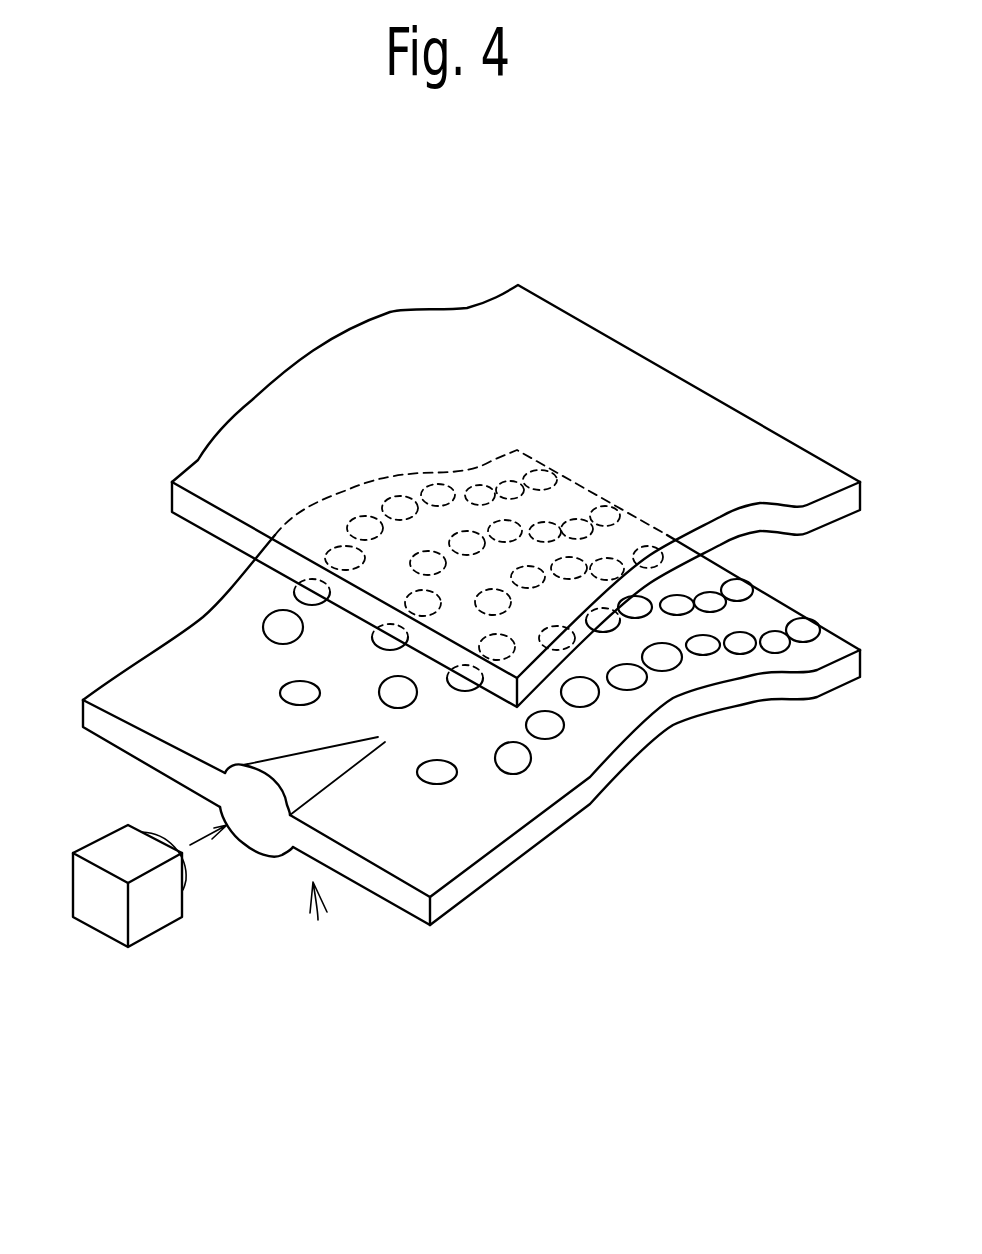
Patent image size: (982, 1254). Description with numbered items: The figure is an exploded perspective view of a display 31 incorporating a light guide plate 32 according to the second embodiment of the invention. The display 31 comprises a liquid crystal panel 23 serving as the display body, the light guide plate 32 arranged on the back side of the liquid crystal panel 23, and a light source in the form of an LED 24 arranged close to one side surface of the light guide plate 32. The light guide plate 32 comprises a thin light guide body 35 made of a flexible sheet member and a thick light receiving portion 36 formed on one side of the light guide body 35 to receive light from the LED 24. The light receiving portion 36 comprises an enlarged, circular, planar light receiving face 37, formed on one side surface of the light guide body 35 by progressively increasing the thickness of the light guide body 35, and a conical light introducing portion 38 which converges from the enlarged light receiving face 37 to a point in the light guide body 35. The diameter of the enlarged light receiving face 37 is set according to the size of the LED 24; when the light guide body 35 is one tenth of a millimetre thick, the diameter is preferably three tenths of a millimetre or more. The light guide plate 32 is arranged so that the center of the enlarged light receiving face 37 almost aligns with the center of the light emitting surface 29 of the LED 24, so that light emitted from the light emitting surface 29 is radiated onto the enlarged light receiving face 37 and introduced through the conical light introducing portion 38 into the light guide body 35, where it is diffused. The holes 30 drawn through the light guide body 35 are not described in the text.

The liquid crystal panel 23 is at (637, 365).
The display 31 is at (192, 559).
The light guide plate 32 is at (632, 762).
The light guide body 35 is at (683, 687).
The through hole 30 is at (513, 763).
The enlarged light receiving face 37 is at (265, 847).
The conical light introducing portion 38 is at (280, 752).
The LED 24 is at (140, 922).
The light emitting surface 29 is at (188, 873).
The light receiving portion 36 is at (318, 920).